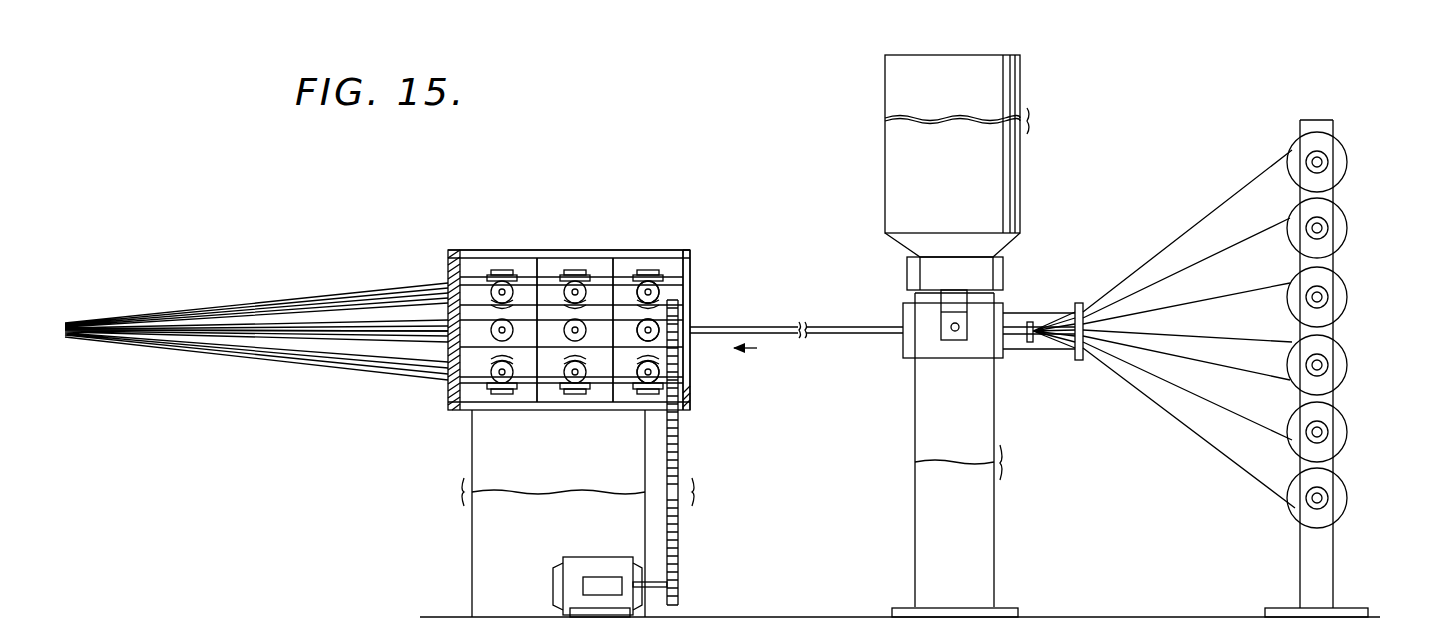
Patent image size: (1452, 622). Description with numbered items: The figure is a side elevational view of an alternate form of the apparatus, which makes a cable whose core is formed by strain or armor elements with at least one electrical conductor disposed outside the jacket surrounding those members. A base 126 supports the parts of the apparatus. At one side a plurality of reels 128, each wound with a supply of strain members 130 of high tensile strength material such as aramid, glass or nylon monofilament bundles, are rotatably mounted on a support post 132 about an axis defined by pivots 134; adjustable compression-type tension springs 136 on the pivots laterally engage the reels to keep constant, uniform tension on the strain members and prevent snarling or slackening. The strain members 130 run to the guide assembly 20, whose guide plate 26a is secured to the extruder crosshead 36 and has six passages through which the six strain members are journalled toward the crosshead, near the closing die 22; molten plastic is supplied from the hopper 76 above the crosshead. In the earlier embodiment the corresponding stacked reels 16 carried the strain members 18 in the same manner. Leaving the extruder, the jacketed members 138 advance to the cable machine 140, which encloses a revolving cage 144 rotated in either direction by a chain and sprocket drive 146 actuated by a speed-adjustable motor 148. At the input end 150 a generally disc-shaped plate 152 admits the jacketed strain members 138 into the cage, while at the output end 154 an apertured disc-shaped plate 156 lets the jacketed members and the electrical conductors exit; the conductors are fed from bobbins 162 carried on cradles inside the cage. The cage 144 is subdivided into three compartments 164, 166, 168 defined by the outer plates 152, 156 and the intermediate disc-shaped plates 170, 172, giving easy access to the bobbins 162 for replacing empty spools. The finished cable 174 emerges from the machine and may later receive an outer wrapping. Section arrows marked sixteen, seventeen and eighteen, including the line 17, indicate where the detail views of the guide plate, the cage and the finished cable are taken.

The reels 16 is at (1046, 300).
The section line 17- 17 is at (318, 240).
The strain members 18 is at (140, 273).
The guide assembly 20 is at (1018, 298).
The closing die 22 is at (1030, 345).
The guide plate 26a is at (1083, 365).
The extruder crosshead 36 is at (948, 348).
The hopper 76 is at (988, 78).
The base 126 is at (1115, 617).
The reels 128 is at (1346, 222).
The strain members 130 is at (1222, 247).
The support post 132 is at (1300, 583).
The pivots 134 is at (1312, 160).
The tension springs 136 is at (1323, 160).
The jacketed members 138 is at (834, 326).
The cable machine 140 is at (580, 330).
The revolving cage 144 is at (676, 249).
The chain and sprocket drive 146 is at (680, 542).
The speed-adjustable motor 148 is at (588, 563).
The input end 150 is at (693, 322).
The disc-shaped plate 152 is at (690, 373).
The output end 154 is at (445, 278).
The disc-shaped plate 156 is at (448, 250).
The bobbins 162 is at (658, 290).
The compartment 164 is at (518, 266).
The compartment 166 is at (578, 264).
The compartment 168 is at (630, 268).
The intermediate disc-shaped plate 170 is at (532, 402).
The intermediate disc-shaped plate 172 is at (612, 403).
The finished cable 174 is at (116, 333).